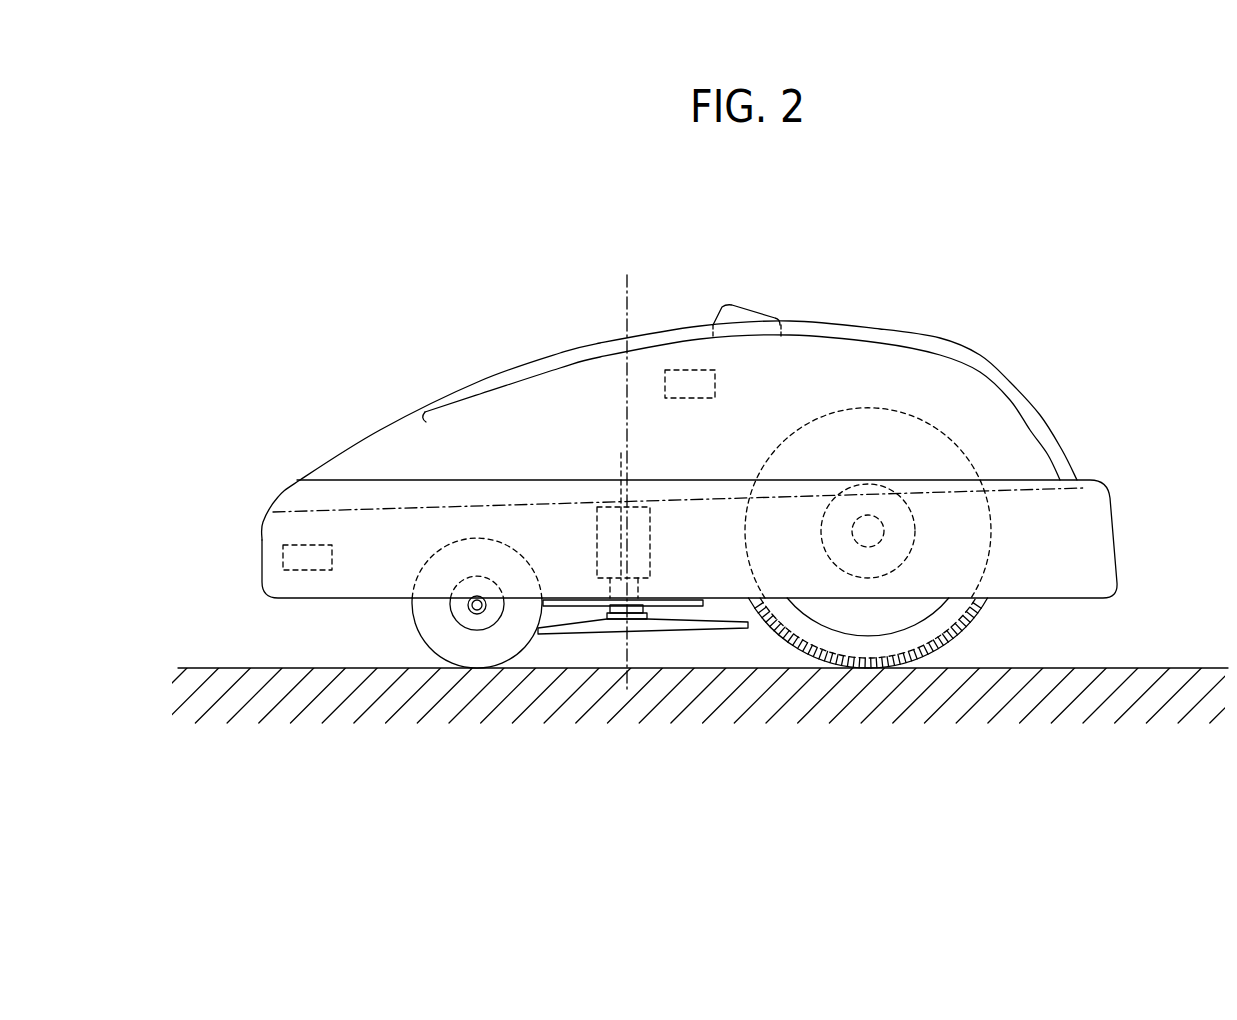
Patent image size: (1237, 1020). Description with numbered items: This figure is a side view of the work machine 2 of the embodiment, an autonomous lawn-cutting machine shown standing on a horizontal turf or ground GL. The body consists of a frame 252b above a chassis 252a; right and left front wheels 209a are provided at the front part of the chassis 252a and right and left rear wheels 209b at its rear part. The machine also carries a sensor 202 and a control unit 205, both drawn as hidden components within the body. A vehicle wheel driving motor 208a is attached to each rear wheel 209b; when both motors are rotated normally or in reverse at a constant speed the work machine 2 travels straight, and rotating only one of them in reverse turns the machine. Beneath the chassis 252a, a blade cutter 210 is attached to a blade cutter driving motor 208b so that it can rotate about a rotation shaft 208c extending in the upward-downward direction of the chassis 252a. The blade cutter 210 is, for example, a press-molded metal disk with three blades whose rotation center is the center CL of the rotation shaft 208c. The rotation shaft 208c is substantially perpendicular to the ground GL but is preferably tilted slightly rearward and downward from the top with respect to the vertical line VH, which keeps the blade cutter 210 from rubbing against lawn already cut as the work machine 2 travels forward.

The work machine 2 is at (293, 334).
The sensor 202 is at (300, 545).
The control unit 205 is at (715, 386).
The vehicle wheel driving motor 208a is at (917, 549).
The blade cutter driving motor 208b is at (643, 558).
The rotation shaft 208c is at (607, 588).
The front wheels 209a is at (505, 650).
The rear wheels 209b is at (906, 643).
The blade cutter 210 is at (708, 642).
The chassis 252a is at (1098, 550).
The frame 252b is at (468, 420).
The vertical line VH is at (633, 283).
The center CL is at (620, 468).
The ground GL is at (1182, 667).